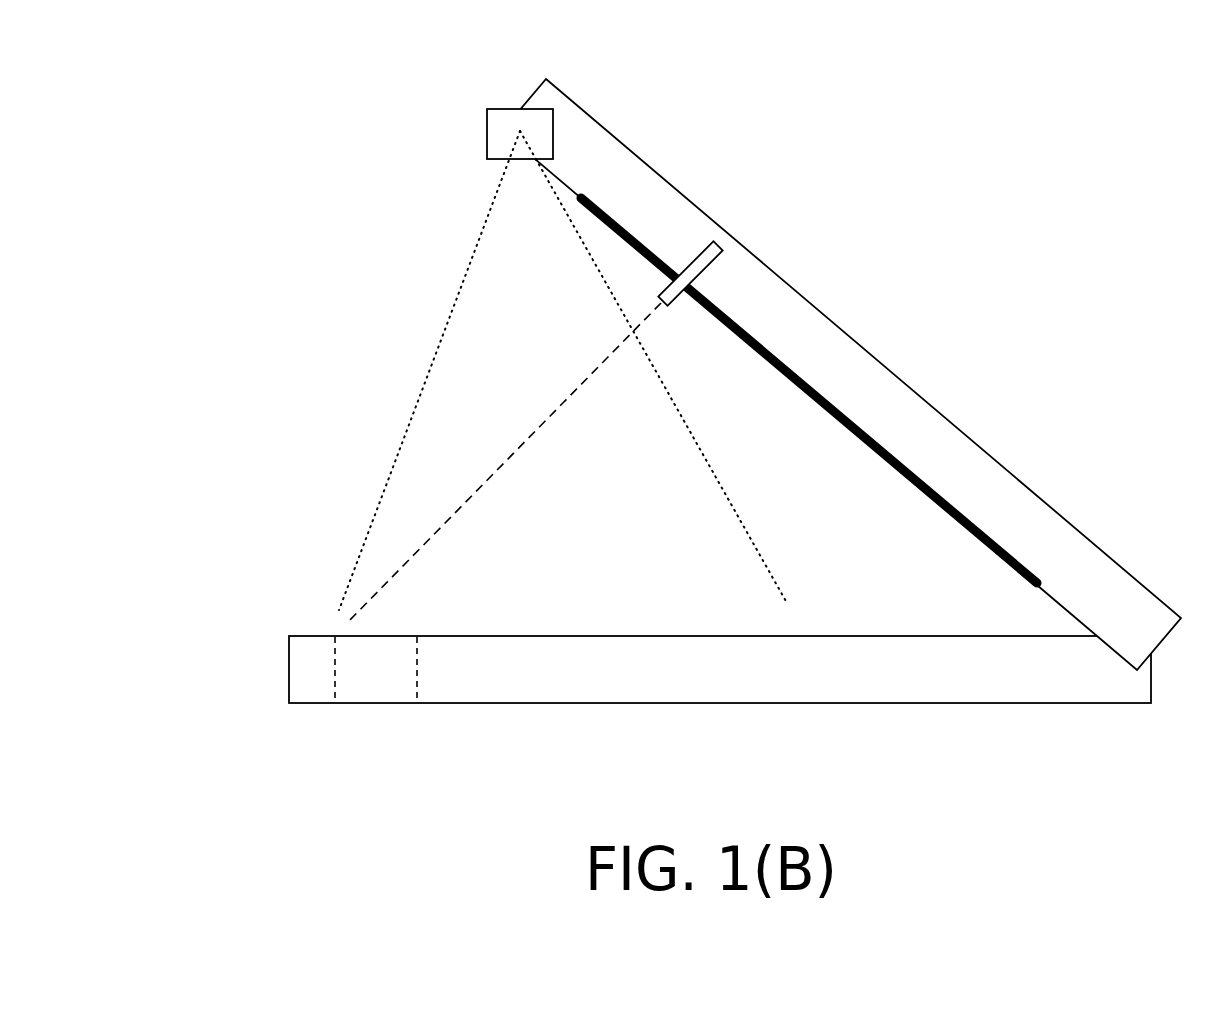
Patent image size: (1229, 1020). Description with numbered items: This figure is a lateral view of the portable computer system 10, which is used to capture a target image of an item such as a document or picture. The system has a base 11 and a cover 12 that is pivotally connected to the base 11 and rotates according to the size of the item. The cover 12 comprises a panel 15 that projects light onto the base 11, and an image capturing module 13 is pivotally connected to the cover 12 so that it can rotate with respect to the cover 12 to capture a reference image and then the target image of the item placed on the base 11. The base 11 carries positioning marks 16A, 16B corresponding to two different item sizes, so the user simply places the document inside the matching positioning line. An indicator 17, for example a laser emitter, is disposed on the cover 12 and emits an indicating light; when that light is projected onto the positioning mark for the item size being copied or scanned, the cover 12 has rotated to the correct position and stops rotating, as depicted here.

The portable computer system 10 is at (739, 97).
The base 11 is at (288, 672).
The cover 12 is at (1020, 520).
The image capturing module 13 is at (487, 118).
The panel 15 is at (792, 382).
The positioning mark 16A is at (335, 678).
The positioning mark 16B is at (417, 670).
The indicator 17 is at (720, 243).